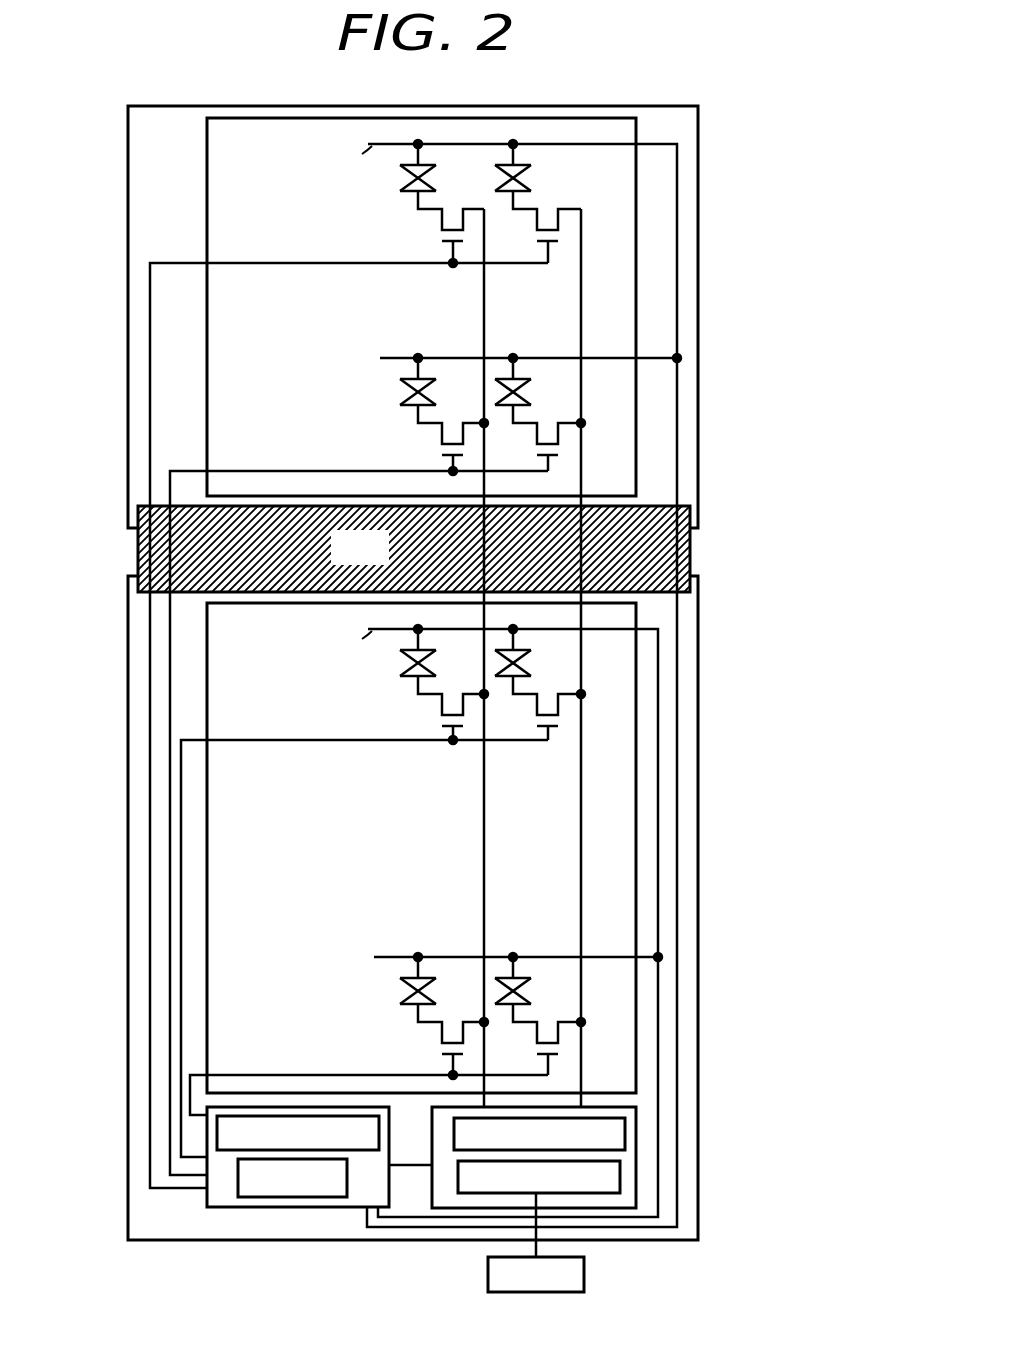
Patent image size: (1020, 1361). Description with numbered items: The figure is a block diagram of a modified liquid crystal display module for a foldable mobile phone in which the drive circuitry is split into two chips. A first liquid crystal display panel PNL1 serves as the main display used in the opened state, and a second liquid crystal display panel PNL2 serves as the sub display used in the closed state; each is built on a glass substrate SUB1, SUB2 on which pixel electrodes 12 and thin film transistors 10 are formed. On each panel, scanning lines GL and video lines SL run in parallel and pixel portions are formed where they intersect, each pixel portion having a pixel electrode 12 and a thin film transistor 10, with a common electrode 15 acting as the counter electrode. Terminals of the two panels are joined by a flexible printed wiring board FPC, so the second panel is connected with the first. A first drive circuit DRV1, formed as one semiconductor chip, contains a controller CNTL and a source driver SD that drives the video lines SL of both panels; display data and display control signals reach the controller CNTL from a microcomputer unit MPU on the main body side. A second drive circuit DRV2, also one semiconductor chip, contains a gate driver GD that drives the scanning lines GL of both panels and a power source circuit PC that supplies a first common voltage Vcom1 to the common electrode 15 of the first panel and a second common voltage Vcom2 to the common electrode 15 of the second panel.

The thin film transistor 10 is at (440, 243).
The pixel electrode 12 is at (410, 207).
The common electrode 15 is at (384, 144).
The glass substrate SUB1 is at (138, 703).
The glass substrate SUB2 is at (138, 223).
The first liquid crystal display panel PNL1 is at (421, 848).
The second liquid crystal display panel PNL2 is at (421, 307).
The flexible printed wiring board FPC is at (415, 549).
The scanning line GL is at (150, 785).
The video line SL is at (484, 800).
The first common voltage Vcom1 is at (658, 838).
The second common voltage Vcom2 is at (677, 300).
The first drive circuit DRV1 is at (559, 1204).
The second drive circuit DRV2 is at (289, 1203).
The gate driver GD is at (298, 1133).
The power source circuit PC is at (292, 1178).
The source driver SD is at (539, 1134).
The controller CNTL is at (539, 1177).
The microcomputer unit MPU is at (536, 1242).